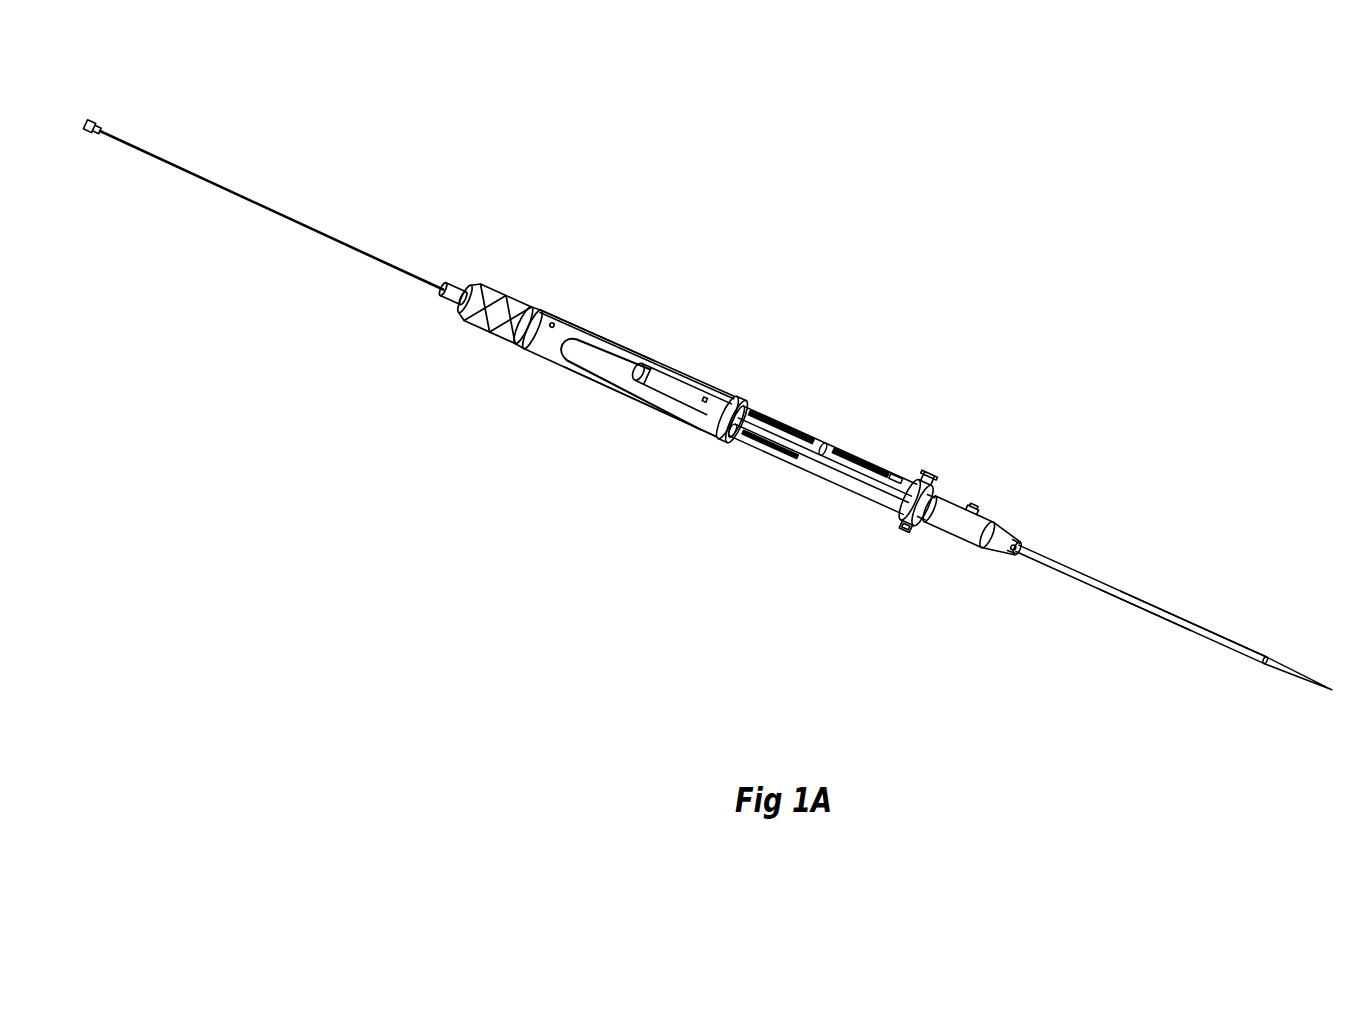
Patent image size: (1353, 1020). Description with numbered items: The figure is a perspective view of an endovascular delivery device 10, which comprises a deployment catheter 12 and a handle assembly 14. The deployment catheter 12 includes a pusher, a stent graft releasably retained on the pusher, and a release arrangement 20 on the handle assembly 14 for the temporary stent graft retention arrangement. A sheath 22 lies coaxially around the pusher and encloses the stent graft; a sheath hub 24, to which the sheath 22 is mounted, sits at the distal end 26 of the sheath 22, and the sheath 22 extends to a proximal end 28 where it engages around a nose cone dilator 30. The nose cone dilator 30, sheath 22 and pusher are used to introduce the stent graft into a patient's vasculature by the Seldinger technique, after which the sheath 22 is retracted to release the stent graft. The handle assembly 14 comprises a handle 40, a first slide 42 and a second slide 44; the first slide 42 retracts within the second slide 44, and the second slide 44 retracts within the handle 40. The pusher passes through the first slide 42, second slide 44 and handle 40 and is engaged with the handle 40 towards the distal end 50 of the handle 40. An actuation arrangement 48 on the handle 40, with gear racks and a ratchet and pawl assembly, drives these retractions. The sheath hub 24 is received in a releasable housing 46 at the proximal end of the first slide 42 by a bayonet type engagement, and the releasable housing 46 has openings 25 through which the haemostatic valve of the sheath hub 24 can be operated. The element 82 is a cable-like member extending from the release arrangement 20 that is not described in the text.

The endovascular delivery device 10 is at (812, 276).
The deployment catheter 12 is at (1140, 627).
The handle assembly 14 is at (676, 449).
The release arrangement 20 is at (487, 338).
The sheath 22 is at (1100, 583).
The sheath hub 24 is at (951, 499).
The openings 25 is at (934, 523).
The distal end of the sheath 26 is at (1020, 573).
The proximal end of the sheath 28 is at (1240, 630).
The nose cone dilator 30 is at (1278, 668).
The handle 40 is at (578, 376).
The first slide 42 is at (845, 480).
The second slide 44 is at (806, 440).
The releasable housing 46 is at (950, 550).
The actuation arrangement 48 is at (684, 368).
The distal end of the handle 50 is at (553, 304).
The cable 82 is at (312, 226).